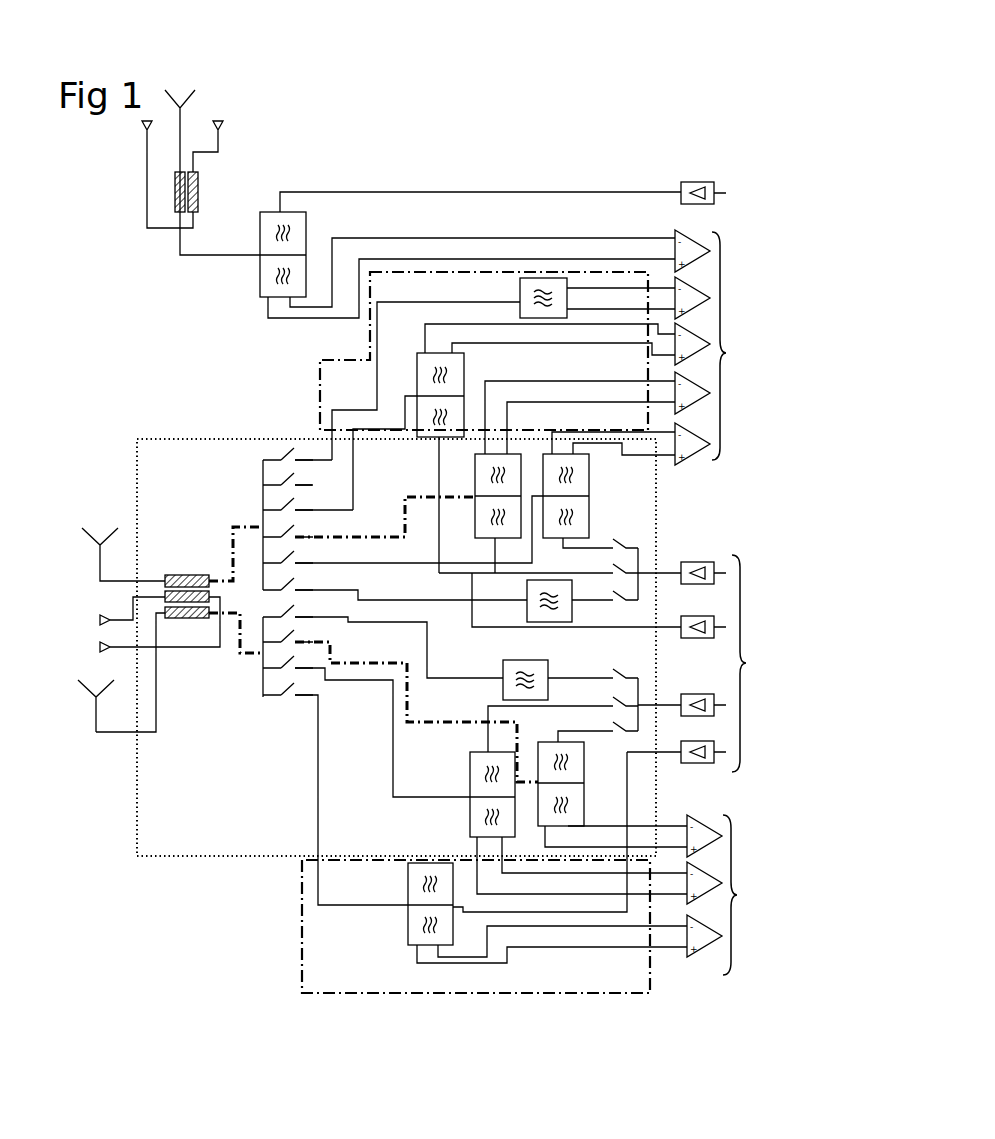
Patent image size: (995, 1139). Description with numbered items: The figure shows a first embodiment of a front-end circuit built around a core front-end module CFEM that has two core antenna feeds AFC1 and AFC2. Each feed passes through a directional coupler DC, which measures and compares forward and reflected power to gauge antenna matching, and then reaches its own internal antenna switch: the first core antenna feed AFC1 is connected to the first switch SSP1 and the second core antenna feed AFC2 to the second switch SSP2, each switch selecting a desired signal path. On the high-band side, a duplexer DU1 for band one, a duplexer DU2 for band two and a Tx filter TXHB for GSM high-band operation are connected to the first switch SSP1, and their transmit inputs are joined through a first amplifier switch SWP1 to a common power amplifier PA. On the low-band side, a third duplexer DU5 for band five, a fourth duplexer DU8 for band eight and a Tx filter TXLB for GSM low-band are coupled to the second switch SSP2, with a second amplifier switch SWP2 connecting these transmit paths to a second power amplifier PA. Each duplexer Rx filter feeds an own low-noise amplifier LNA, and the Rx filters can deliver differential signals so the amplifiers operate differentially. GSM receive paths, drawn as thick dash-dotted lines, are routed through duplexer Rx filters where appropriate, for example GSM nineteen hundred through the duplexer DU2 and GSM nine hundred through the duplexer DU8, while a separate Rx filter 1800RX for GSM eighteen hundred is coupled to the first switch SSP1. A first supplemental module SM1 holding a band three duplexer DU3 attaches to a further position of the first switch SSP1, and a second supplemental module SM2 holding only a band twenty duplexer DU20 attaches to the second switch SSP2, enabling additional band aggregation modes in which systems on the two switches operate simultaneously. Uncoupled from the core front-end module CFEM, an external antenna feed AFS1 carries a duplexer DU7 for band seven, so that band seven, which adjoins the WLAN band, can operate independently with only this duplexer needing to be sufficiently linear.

The external antenna feed AFS1 is at (178, 88).
The directional coupler DC is at (145, 232).
The duplexer for band 7 DU7 is at (268, 210).
The power amplifier PA is at (706, 180).
The Rx filter for GSM 1800 1800RX is at (536, 278).
The low-noise amplifier LNA is at (722, 355).
The first supplemental module SM1 is at (318, 388).
The second supplemental module SM2 is at (305, 985).
The band 3 duplexer DU3 is at (460, 366).
The duplexer for band 2 DU2 is at (478, 505).
The duplexer for band 1 DU1 is at (589, 465).
The first switch SSP1 is at (262, 460).
The second switch SSP2 is at (292, 697).
The first amplifier switch SWP1 is at (645, 557).
The second amplifier switch SWP2 is at (640, 690).
The Tx filter for GSM high-band TXHB is at (530, 612).
The Tx filter for GSM low-band TXLB is at (548, 668).
The third duplexer DU5 is at (478, 762).
The fourth duplexer DU8 is at (582, 762).
The band 20 duplexer DU20 is at (415, 925).
The first core antenna feed AFC1 is at (103, 527).
The second core antenna feed AFC2 is at (98, 742).
The core front-end module CFEM is at (275, 862).